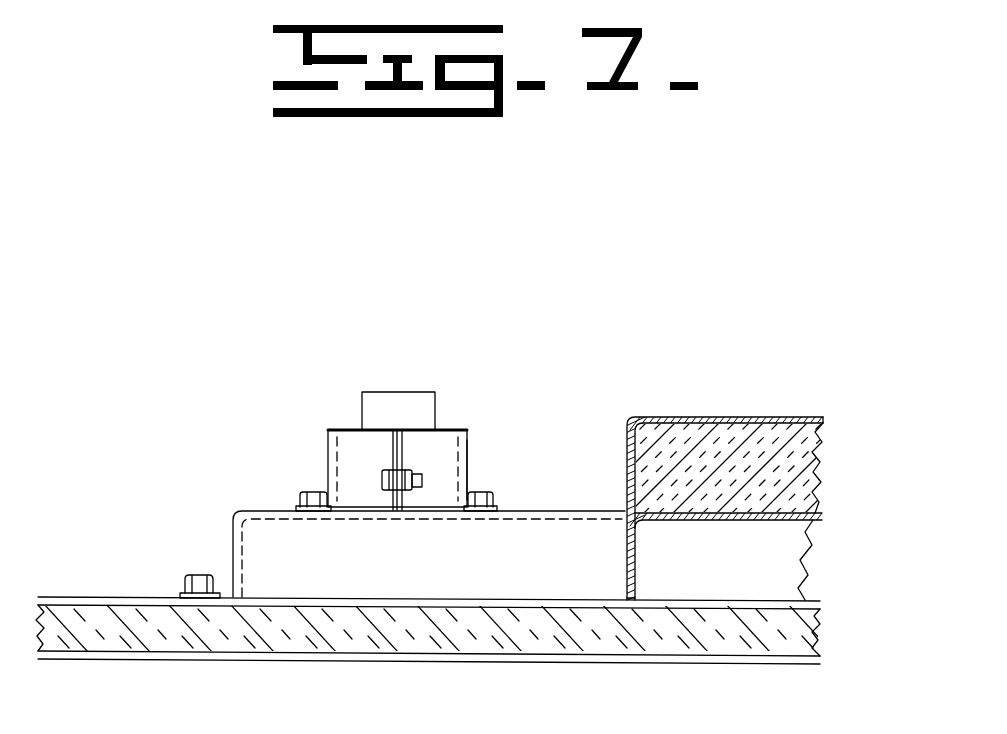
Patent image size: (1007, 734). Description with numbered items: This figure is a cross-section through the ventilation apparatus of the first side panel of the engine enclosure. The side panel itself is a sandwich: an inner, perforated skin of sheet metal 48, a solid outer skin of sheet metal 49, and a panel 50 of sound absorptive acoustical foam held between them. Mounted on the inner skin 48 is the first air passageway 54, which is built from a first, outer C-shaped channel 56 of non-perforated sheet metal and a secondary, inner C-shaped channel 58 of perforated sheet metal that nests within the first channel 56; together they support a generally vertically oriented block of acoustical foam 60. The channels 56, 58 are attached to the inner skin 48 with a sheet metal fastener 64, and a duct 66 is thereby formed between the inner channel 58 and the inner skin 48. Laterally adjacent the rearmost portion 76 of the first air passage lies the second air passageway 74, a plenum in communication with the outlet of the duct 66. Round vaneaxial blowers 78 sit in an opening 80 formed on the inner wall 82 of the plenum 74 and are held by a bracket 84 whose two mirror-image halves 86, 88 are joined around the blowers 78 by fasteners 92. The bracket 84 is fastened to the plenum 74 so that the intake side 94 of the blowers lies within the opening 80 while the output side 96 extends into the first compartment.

The inner perforated skin of sheet metal 48 is at (70, 597).
The outer skin of sheet metal 49 is at (158, 661).
The panel of sound absorptive material 50 is at (337, 623).
The first air passageway 54 is at (627, 572).
The first C-shaped channel 56 is at (708, 423).
The inner C-shaped channel 58 is at (810, 541).
The first block of acoustical foam 60 is at (815, 440).
The sheet metal fastener 64 is at (195, 575).
The duct 66 is at (735, 576).
The second air passageway 74 is at (730, 483).
The rearmost portion of the first air passage 76 is at (625, 440).
The blowers 78 is at (477, 478).
The opening 80 is at (343, 527).
The inner wall of the plenum 82 is at (272, 510).
The bracket 84 is at (418, 434).
The first bracket half 86 is at (338, 430).
The second bracket half 88 is at (466, 460).
The fasteners 92 is at (386, 468).
The intake side of the blowers 94 is at (443, 527).
The output side of the blowers 96 is at (405, 392).